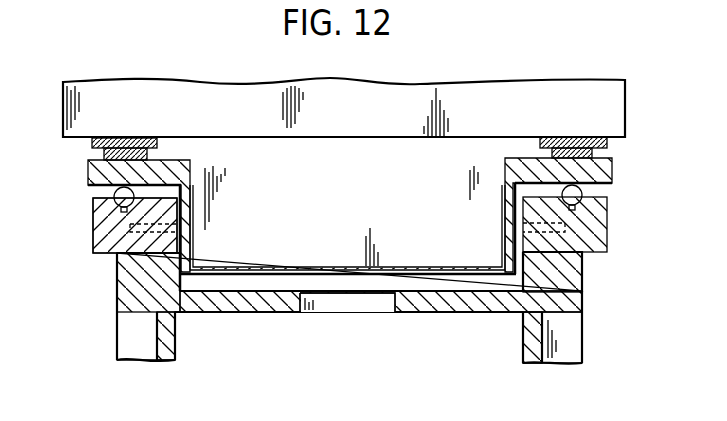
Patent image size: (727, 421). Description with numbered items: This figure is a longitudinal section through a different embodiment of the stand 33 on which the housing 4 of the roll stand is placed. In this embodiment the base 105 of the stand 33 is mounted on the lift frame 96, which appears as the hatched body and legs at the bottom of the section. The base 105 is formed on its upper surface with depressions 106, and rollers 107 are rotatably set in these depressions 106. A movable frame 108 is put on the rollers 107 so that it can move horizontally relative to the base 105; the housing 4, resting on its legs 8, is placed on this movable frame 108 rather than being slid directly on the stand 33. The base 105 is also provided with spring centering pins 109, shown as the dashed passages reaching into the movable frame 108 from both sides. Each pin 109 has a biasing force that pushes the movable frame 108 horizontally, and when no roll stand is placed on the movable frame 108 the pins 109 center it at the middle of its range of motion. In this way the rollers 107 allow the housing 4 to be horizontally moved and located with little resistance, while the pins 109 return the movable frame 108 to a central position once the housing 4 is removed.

The housing 4 is at (63, 100).
The legs 8 is at (100, 154).
The stand 33 is at (78, 232).
The lift frame 96 is at (583, 313).
The base 105 is at (606, 246).
The depressions 106 is at (117, 213).
The rollers 107 is at (116, 191).
The movable frame 108 is at (612, 172).
The spring centering pins 109 is at (180, 228).